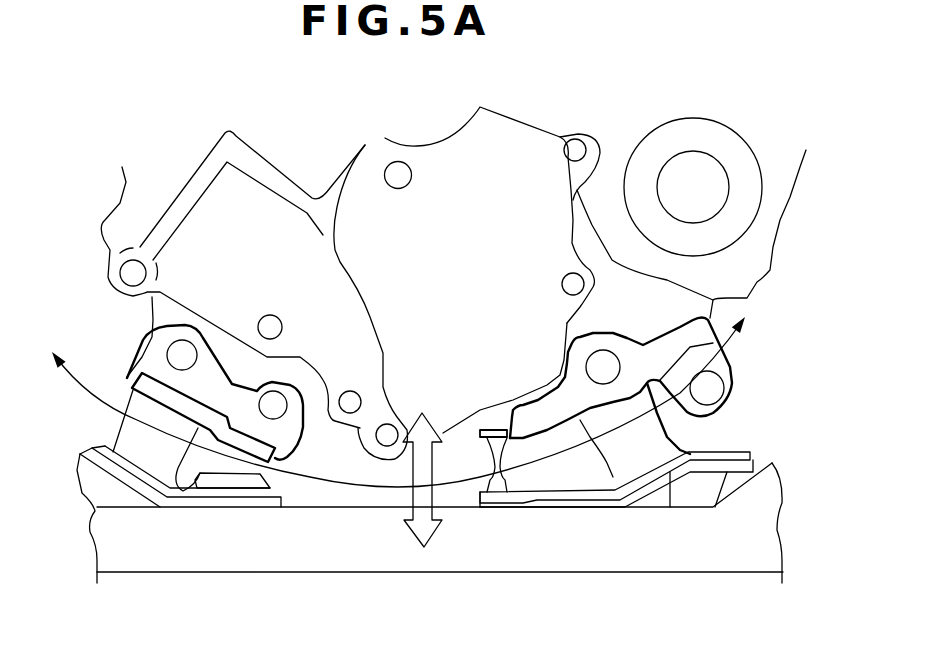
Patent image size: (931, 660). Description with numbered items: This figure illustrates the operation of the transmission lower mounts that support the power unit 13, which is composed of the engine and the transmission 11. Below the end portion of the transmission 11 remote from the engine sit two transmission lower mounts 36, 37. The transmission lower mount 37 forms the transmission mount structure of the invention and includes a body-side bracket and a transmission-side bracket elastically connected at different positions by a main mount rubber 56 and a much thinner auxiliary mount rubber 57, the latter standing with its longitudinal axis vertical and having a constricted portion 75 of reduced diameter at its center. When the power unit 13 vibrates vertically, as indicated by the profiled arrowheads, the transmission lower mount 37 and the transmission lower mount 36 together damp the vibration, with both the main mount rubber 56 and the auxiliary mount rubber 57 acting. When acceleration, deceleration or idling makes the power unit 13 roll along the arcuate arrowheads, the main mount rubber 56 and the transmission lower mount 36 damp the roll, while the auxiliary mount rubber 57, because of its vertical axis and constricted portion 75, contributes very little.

The transmission 11 is at (472, 203).
The power unit 13 is at (180, 175).
The transmission lower mount 36 is at (137, 494).
The transmission lower mount 37 is at (640, 500).
The main mount rubber 56 is at (683, 428).
The auxiliary mount rubber 57 is at (447, 430).
The constricted portion 75 is at (497, 473).